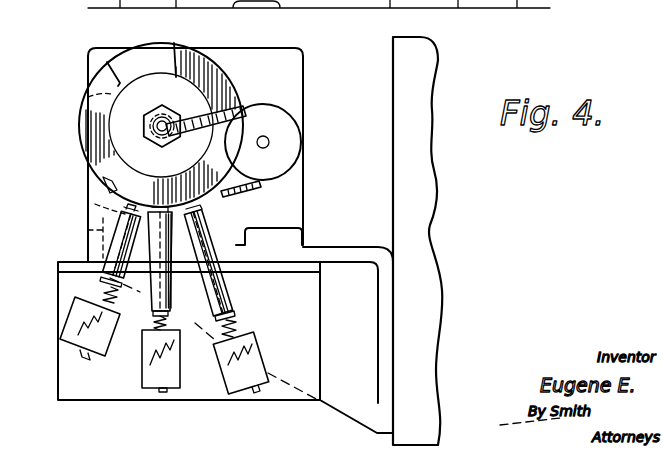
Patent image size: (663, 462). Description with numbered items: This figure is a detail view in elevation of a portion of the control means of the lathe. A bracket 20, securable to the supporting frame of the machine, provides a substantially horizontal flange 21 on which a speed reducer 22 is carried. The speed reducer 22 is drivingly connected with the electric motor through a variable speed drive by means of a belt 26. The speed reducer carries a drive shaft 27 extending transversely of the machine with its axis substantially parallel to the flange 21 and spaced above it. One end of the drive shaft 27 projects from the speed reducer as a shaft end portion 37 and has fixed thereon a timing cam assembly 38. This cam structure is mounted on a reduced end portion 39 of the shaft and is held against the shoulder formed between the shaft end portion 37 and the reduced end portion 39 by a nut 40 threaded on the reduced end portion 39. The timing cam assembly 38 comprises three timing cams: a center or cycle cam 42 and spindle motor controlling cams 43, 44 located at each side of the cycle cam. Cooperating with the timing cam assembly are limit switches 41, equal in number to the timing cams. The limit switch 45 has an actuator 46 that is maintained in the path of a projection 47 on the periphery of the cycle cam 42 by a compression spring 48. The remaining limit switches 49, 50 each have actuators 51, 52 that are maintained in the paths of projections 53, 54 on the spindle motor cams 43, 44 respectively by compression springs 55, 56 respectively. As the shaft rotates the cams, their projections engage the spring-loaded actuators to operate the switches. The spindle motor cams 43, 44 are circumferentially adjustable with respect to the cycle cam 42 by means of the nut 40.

The bracket 20 is at (352, 285).
The flange 21 is at (334, 243).
The speed reducer 22 is at (305, 68).
The belt 26 is at (242, 178).
The drive shaft 27 is at (151, 140).
The shaft end portion 37 is at (146, 125).
The timing cam assembly 38 is at (229, 52).
The reduced end portion 39 is at (166, 128).
The nut 40 is at (163, 104).
The limit switches 41 is at (108, 401).
The cycle cam 42 is at (92, 180).
The spindle motor controlling cam 43 is at (105, 92).
The spindle motor controlling cam 44 is at (137, 56).
The limit switch 45 is at (80, 333).
The actuator 46 is at (124, 212).
The projection 47 is at (95, 204).
The compression spring 48 is at (100, 283).
The limit switch 49 is at (150, 370).
The limit switch 50 is at (260, 354).
The actuator 51 is at (160, 207).
The actuator 52 is at (206, 206).
The projection 53 is at (82, 137).
The projection 54 is at (163, 70).
The compression spring 55 is at (168, 326).
The compression spring 56 is at (240, 323).